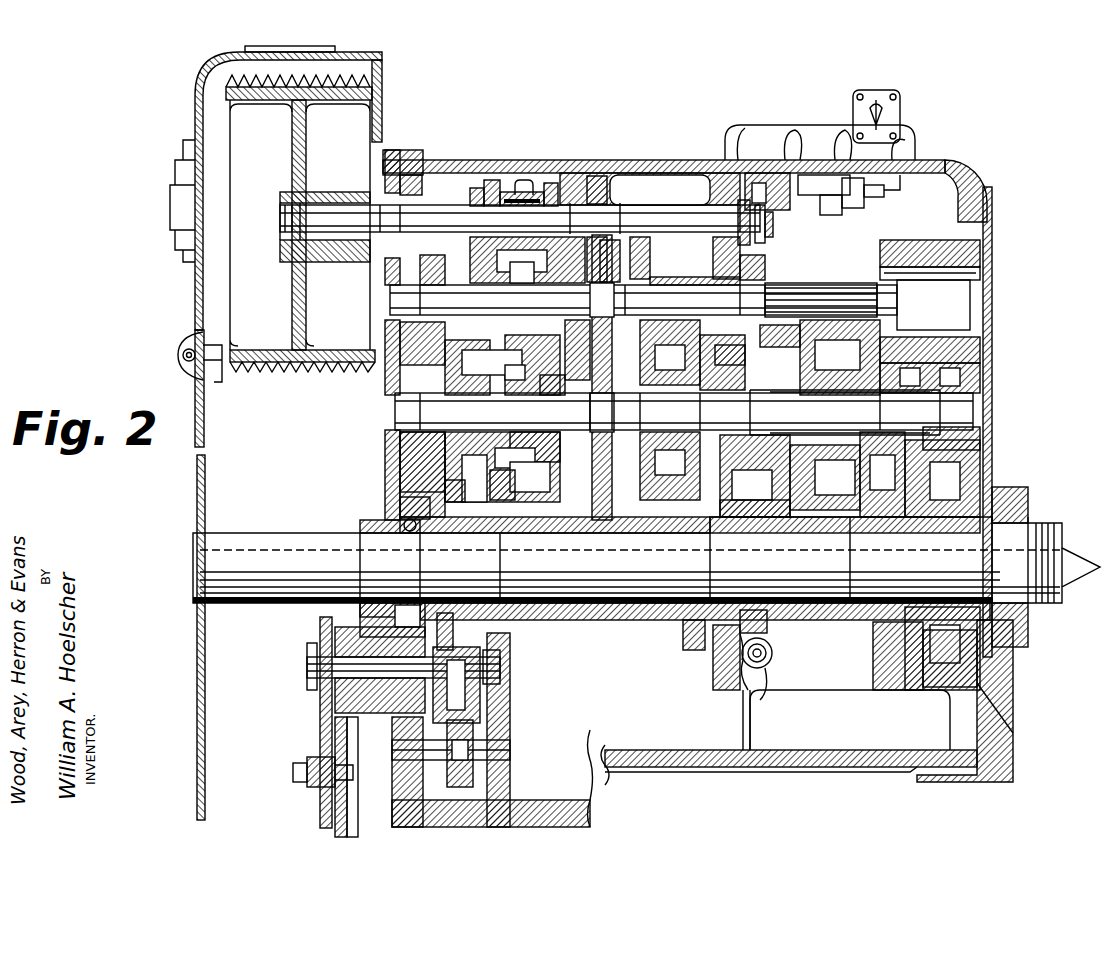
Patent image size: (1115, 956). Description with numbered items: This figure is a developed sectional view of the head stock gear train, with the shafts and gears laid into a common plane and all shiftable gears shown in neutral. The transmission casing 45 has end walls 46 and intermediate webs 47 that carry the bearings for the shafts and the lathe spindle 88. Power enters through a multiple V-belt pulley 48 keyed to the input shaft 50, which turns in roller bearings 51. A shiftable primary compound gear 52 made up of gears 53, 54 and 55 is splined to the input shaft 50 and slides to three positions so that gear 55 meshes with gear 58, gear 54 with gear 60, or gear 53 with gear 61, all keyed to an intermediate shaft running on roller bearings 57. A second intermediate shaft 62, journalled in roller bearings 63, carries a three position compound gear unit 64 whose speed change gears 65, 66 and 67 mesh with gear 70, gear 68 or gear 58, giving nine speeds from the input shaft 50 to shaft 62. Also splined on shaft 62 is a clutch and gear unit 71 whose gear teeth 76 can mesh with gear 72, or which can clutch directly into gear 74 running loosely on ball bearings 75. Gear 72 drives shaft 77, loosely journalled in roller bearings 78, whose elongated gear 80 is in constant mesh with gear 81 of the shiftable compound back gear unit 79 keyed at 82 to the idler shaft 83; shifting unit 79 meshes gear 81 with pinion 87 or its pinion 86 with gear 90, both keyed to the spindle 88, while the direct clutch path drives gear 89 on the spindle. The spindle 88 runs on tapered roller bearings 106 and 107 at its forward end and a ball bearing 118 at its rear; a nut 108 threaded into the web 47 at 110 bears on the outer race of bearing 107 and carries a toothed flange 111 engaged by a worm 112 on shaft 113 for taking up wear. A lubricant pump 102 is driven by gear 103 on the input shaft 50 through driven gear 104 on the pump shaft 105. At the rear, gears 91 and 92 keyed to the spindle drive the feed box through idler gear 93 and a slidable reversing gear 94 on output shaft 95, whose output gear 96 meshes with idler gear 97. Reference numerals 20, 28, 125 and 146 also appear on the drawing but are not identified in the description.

The headstock housing 20 is at (965, 190).
The bearing cap 28 is at (890, 252).
The transmission casing 45 is at (606, 160).
The end walls 46 is at (395, 374).
The intermediate webs 47 is at (592, 489).
The multiple V-belt pulley 48 is at (296, 362).
The input shaft 50 is at (435, 212).
The roller bearings 51 is at (405, 168).
The shiftable primary compound gear 52 is at (525, 190).
The gear 53 is at (551, 181).
The gear 54 is at (492, 178).
The gear 55 is at (476, 186).
The roller bearings 57 is at (630, 262).
The gear 58 is at (470, 248).
The gear 60 is at (447, 262).
The gear 61 is at (572, 360).
The second intermediate shaft 62 is at (395, 412).
The roller bearings 63 is at (398, 452).
The three position compound gear unit 64 is at (512, 475).
The speed change gear 65 is at (730, 364).
The speed change gear 66 is at (498, 490).
The speed change gear 67 is at (448, 486).
The gear 68 is at (512, 352).
The gear 70 is at (554, 380).
The clutch and gear unit 71 is at (648, 455).
The gear 72 is at (660, 368).
The gear 74 is at (676, 482).
The ball bearings 75 is at (735, 360).
The gear teeth 76 is at (650, 478).
The shaft 77 is at (755, 290).
The roller bearings 78 is at (650, 273).
The shiftable compound back gear unit 79 is at (825, 378).
The elongated gear 80 is at (848, 290).
The gear 81 is at (822, 362).
The key 82 is at (840, 415).
The idler shaft 83 is at (895, 400).
The pinion 86 is at (855, 450).
The pinion 87 is at (780, 640).
The lathe spindle 88 is at (645, 600).
The gear 89 is at (690, 652).
The gear 90 is at (905, 692).
The gear 91 is at (440, 620).
The gear 92 is at (452, 635).
The idler gear 93 is at (470, 725).
The slidable reversing gear 94 is at (455, 702).
The output shaft 95 is at (470, 666).
The output gear 96 is at (320, 706).
The idler gear 97 is at (320, 733).
The lubricant pump 102 is at (810, 170).
The gear 103 is at (766, 238).
The driven gear 104 is at (762, 172).
The pump shaft 105 is at (788, 150).
The tapered roller bearing 106 is at (985, 475).
The tapered roller bearing 107 is at (716, 668).
The nut 108 is at (748, 487).
The screw thread 110 is at (748, 690).
The flange 111 is at (772, 656).
The worm 112 is at (775, 665).
The shaft 113 is at (771, 675).
The ball bearing 118 is at (425, 510).
The gear 125 is at (470, 445).
The shifter fork 146 is at (525, 178).